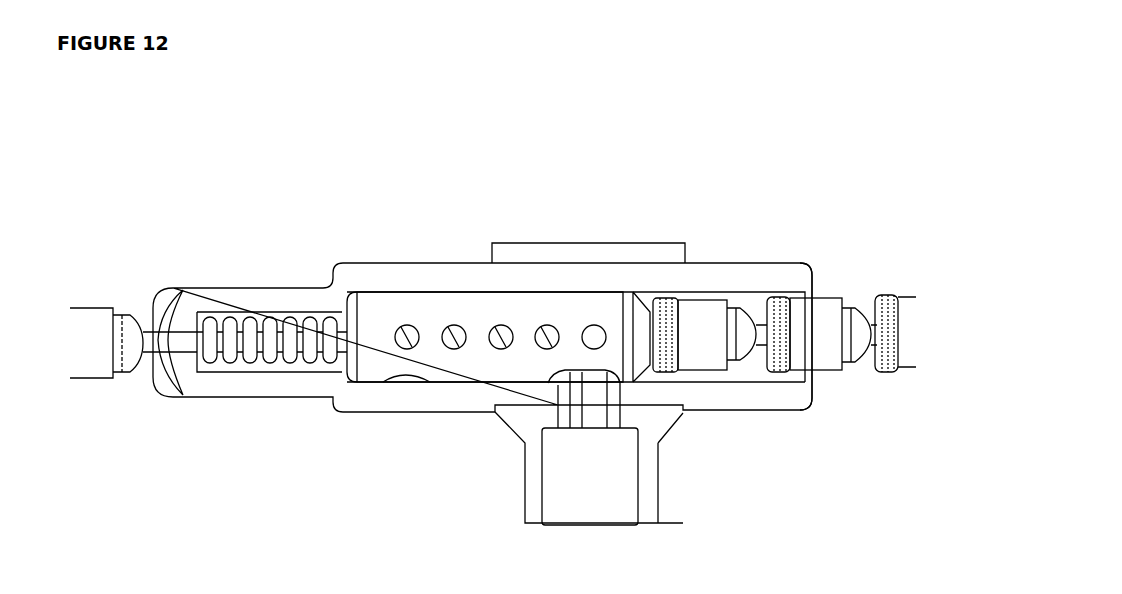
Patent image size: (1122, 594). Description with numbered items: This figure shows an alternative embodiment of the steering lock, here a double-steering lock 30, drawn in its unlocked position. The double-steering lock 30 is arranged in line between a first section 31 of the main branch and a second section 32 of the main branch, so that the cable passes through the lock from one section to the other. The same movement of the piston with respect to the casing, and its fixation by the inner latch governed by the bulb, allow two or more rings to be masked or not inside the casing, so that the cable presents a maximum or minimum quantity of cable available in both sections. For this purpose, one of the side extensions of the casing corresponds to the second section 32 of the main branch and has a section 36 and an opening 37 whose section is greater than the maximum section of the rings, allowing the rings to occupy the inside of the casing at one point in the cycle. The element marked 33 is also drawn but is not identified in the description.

The double-steering lock 30 is at (467, 247).
The section 1 of the main branch 31 is at (74, 293).
The section 2 of the main branch 32 is at (858, 265).
The spring 33 is at (167, 310).
The section 36 is at (752, 295).
The opening 37 is at (810, 397).